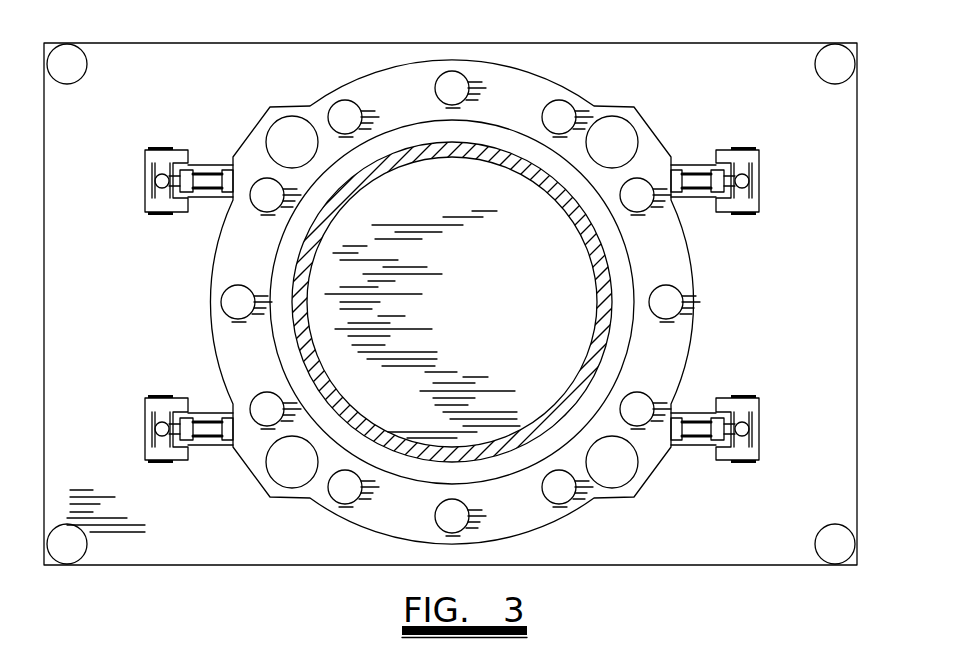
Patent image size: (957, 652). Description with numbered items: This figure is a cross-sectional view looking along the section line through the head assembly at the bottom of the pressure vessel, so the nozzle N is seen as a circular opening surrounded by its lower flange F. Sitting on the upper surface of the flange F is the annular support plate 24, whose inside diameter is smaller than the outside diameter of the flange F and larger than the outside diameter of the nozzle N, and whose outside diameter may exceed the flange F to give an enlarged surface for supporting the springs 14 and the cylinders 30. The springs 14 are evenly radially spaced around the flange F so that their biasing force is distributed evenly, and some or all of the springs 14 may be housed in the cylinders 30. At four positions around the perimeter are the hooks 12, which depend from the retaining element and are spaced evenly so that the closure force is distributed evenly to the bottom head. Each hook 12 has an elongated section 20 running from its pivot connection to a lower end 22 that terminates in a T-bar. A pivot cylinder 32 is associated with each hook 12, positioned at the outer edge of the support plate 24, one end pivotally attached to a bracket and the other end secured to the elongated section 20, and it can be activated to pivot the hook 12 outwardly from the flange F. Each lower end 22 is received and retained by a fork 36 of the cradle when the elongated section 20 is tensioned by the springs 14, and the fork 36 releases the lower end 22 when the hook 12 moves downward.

The hook 12 is at (753, 384).
The spring 14 is at (452, 84).
The elongated section 20 is at (750, 410).
The lower end 22 is at (754, 440).
The annular support plate 24 is at (399, 87).
The cylinder 30 is at (608, 138).
The pivot cylinder 32 is at (690, 178).
The fork 36 is at (450, 304).
The nozzle N is at (602, 300).
The lower flange F is at (613, 378).